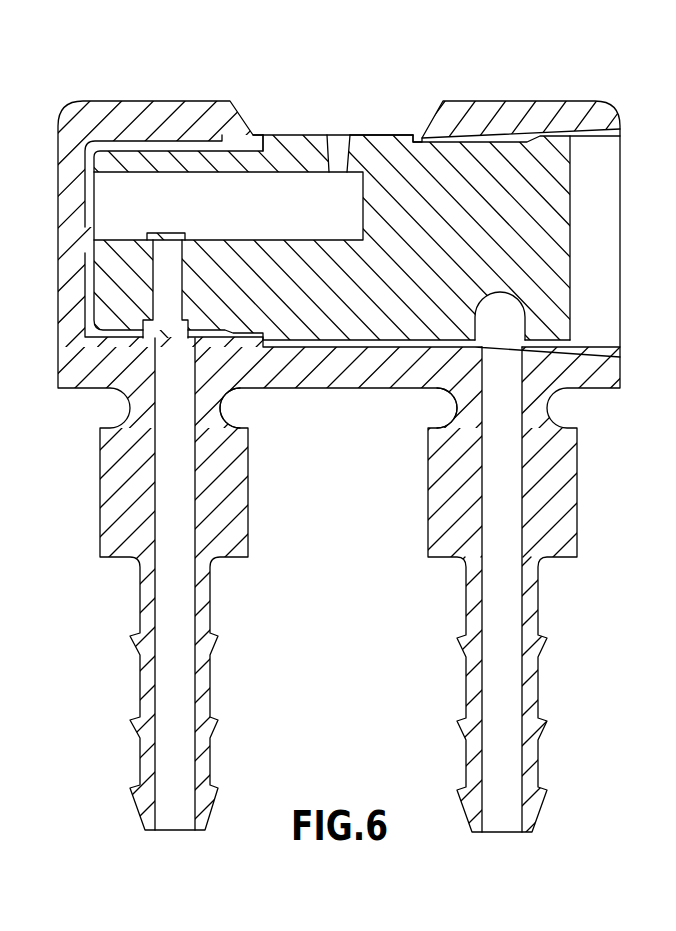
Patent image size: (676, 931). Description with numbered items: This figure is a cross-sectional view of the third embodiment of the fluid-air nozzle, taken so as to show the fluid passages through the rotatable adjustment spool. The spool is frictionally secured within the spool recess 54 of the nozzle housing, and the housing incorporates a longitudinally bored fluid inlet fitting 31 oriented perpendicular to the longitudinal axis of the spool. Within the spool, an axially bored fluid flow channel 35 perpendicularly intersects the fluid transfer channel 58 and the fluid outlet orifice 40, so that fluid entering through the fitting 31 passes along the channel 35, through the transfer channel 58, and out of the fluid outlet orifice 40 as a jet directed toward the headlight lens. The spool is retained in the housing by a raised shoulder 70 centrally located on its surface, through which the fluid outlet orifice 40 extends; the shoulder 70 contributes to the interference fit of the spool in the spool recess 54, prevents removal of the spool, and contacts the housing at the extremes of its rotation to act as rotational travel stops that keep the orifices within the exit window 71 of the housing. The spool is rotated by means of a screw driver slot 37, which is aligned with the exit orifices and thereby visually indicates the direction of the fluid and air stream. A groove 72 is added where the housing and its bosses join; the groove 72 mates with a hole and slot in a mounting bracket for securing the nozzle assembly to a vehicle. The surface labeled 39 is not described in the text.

The fluid inlet fitting 31 is at (173, 832).
The spool recess 54 is at (93, 149).
The fluid flow channel 35 is at (105, 201).
The fluid transfer channel 58 is at (167, 250).
The exit window 71 is at (257, 135).
The raised shoulder 70 is at (280, 135).
The fluid outlet orifice 40 is at (337, 135).
The ledge surface 39 is at (380, 135).
The screw driver slot 37 is at (600, 224).
The groove 72 is at (236, 398).